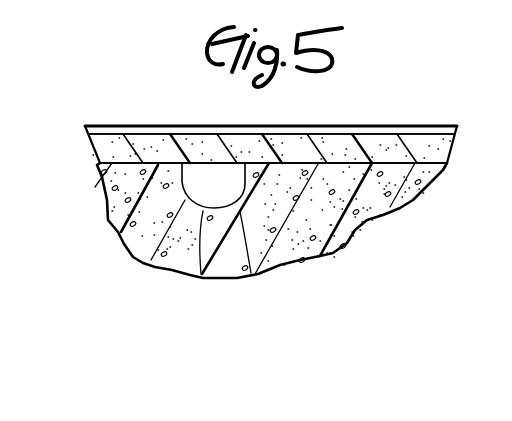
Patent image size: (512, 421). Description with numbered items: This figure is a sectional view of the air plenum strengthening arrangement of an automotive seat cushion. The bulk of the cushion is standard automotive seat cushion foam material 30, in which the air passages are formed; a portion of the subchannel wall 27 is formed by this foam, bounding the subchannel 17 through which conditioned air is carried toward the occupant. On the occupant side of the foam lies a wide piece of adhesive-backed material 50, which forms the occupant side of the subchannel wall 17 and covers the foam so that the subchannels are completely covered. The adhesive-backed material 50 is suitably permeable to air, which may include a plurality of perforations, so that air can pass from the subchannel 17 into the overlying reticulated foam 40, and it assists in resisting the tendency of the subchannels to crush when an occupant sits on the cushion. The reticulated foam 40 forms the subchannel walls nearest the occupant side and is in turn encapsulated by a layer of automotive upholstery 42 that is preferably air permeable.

The reticulated foam 40 is at (405, 146).
The automotive upholstery layer 42 is at (343, 132).
The adhesive-backed material 50 is at (240, 207).
The seat cushion foam material 30 is at (146, 262).
The subchannel wall 27 is at (201, 278).
The subchannel 17 is at (256, 276).